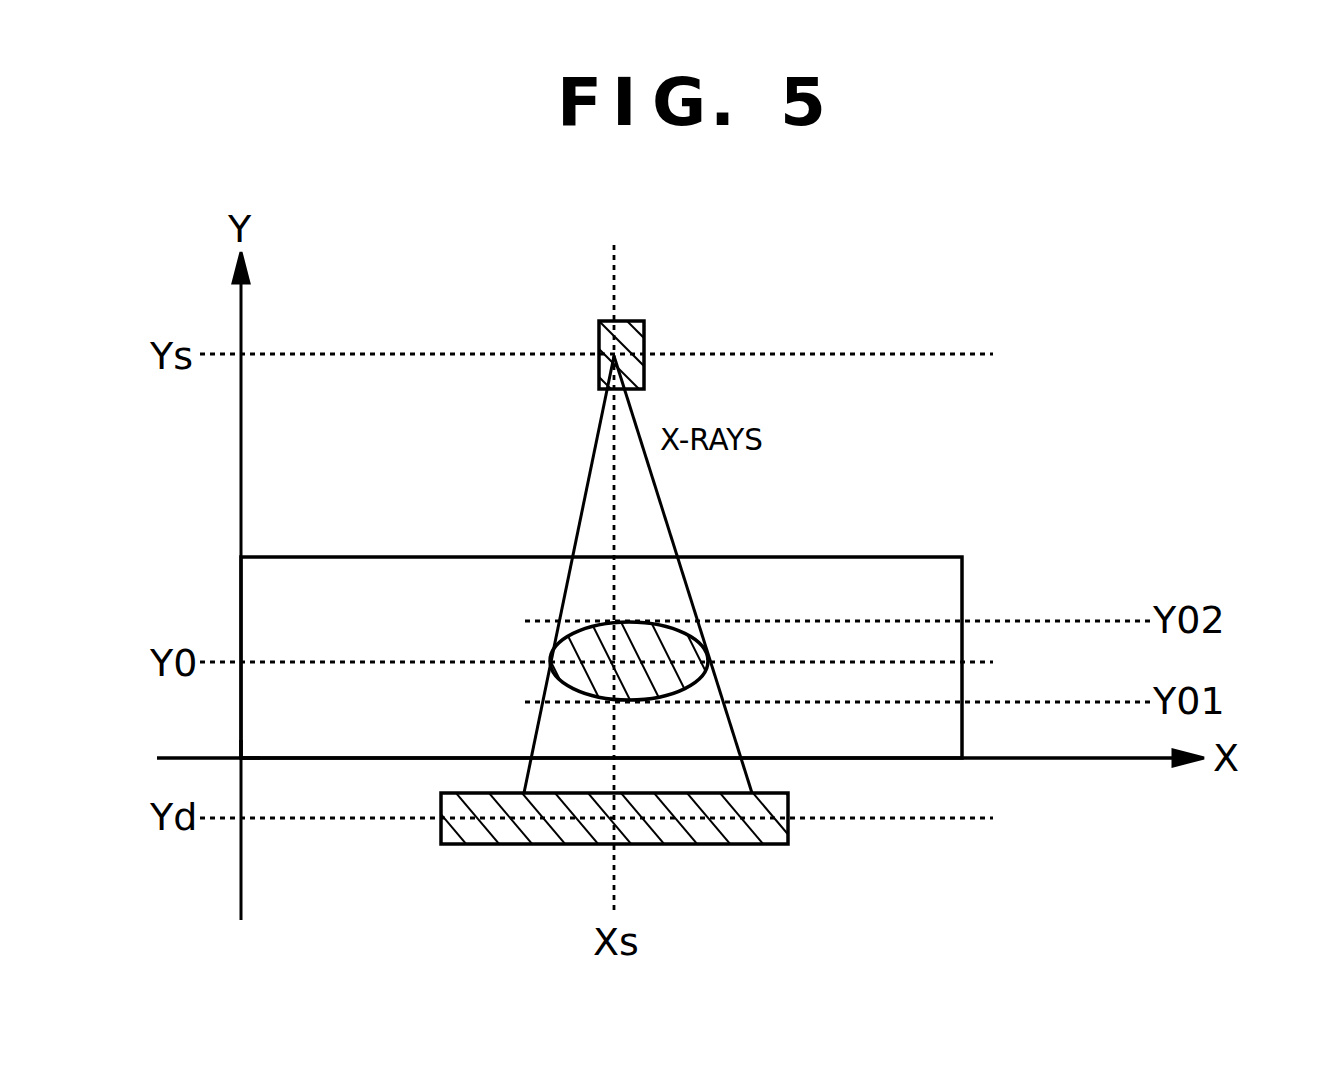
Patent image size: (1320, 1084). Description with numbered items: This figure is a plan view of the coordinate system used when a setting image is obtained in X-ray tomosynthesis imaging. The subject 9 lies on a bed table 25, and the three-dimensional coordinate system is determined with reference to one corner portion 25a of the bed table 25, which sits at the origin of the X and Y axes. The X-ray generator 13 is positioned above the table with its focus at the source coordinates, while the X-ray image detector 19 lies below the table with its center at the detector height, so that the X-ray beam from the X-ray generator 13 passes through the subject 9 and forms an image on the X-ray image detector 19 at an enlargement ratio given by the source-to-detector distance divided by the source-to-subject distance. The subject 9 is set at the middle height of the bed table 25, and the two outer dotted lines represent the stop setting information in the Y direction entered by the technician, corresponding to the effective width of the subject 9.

The X-ray generator 13 is at (640, 321).
The subject to be examined 9 is at (681, 640).
The bed table 25 is at (357, 557).
The corner portion 25a is at (242, 760).
The X-ray image detector 19 is at (725, 844).